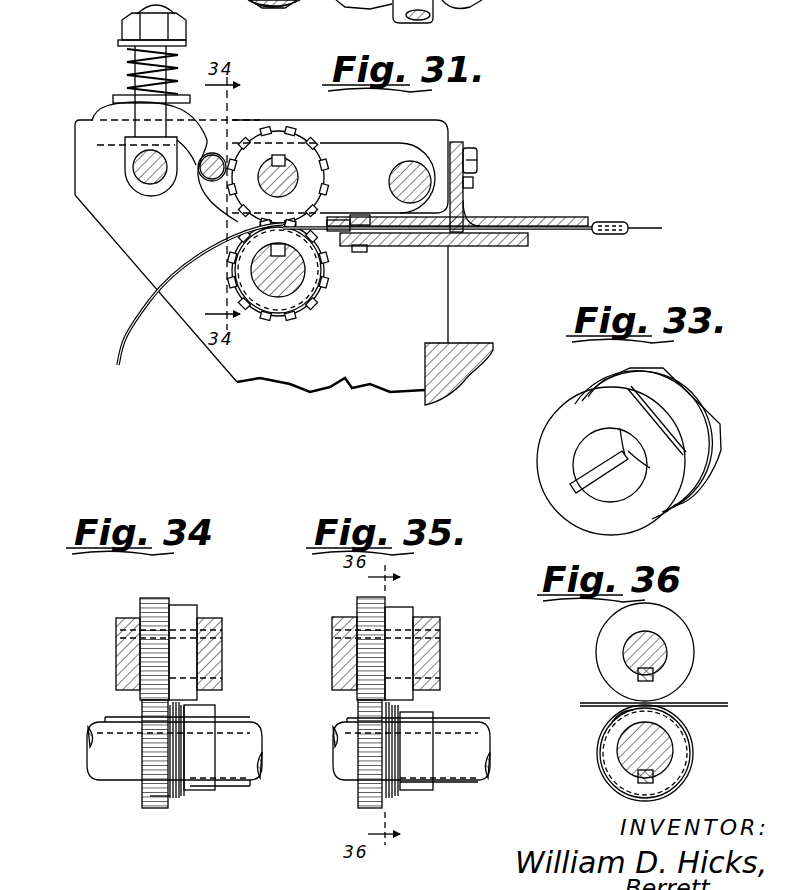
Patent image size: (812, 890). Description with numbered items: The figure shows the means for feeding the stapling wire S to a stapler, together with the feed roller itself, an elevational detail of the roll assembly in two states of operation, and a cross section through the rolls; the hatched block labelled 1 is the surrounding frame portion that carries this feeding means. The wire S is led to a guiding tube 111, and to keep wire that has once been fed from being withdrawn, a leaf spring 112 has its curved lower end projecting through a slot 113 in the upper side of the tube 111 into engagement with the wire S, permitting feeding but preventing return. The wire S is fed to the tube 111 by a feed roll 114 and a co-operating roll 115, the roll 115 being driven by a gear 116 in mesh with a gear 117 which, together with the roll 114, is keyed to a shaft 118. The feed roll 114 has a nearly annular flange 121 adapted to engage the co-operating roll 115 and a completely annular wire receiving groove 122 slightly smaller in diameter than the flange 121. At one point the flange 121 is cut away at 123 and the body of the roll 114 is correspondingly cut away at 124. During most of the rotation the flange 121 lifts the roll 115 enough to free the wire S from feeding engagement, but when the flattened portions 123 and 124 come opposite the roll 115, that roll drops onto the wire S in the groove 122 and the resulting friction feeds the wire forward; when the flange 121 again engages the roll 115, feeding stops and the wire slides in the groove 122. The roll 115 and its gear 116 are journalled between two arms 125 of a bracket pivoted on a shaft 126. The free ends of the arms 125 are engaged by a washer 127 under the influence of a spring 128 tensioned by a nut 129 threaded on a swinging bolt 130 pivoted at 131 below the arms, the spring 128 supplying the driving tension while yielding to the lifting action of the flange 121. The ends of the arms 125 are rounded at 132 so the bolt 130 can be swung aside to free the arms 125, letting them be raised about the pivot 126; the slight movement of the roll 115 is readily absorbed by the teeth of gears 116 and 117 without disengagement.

In FIG. 31, the frame 1 is at (470, 347).
In FIG. 31, the guiding tube 111 is at (605, 222).
In FIG. 31, the leaf spring 112 is at (468, 210).
In FIG. 31, the slot 113 is at (490, 217).
In FIG. 31, the feed roll 114 is at (317, 285).
In FIG. 33, the feed roll 114 is at (588, 383).
In FIG. 36, the feed roll 114 is at (697, 736).
In FIG. 31, the co-operating roll 115 is at (312, 172).
In FIG. 34, the co-operating roll 115 is at (185, 612).
In FIG. 35, the co-operating roll 115 is at (405, 610).
In FIG. 36, the co-operating roll 115 is at (675, 630).
In FIG. 31, the gear 116 is at (328, 182).
In FIG. 34, the gear 116 is at (145, 598).
In FIG. 35, the gear 116 is at (358, 597).
In FIG. 31, the gear 117 is at (317, 312).
In FIG. 34, the gear 117 is at (140, 795).
In FIG. 35, the gear 117 is at (380, 715).
In FIG. 31, the shaft 118 is at (300, 273).
In FIG. 34, the shaft 118 is at (90, 735).
In FIG. 35, the shaft 118 is at (338, 757).
In FIG. 36, the shaft 118 is at (663, 760).
In FIG. 33, the nearly annular flange 121 is at (572, 402).
In FIG. 34, the nearly annular flange 121 is at (172, 800).
In FIG. 35, the nearly annular flange 121 is at (385, 797).
In FIG. 36, the nearly annular flange 121 is at (600, 762).
In FIG. 33, the wire receiving groove 122 is at (680, 425).
In FIG. 34, the wire receiving groove 122 is at (182, 800).
In FIG. 35, the wire receiving groove 122 is at (398, 797).
In FIG. 36, the wire receiving groove 122 is at (608, 783).
In FIG. 33, the cut away portion of flange 123 is at (645, 410).
In FIG. 34, the cut away portion of flange 123 is at (155, 800).
In FIG. 36, the cut away portion of flange 123 is at (614, 722).
In FIG. 33, the cut away portion of roll body 124 is at (685, 400).
In FIG. 34, the cut away portion of roll body 124 is at (198, 792).
In FIG. 35, the cut away portion of roll body 124 is at (416, 751).
In FIG. 31, the bracket arms 125 is at (100, 143).
In FIG. 34, the bracket arms 125 is at (116, 650).
In FIG. 35, the bracket arms 125 is at (332, 663).
In FIG. 31, the shaft 126 is at (411, 162).
In FIG. 31, the washer 127 is at (118, 97).
In FIG. 31, the spring 128 is at (127, 64).
In FIG. 31, the nut 129 is at (122, 32).
In FIG. 31, the swinging bolt 130 is at (137, 5).
In FIG. 31, the pivot 131 is at (140, 168).
In FIG. 31, the rounded ends 132 is at (98, 115).
In FIG. 31, the stapling wire S is at (127, 320).
In FIG. 34, the stapling wire S is at (182, 705).
In FIG. 35, the stapling wire S is at (397, 703).
In FIG. 36, the stapling wire S is at (583, 700).